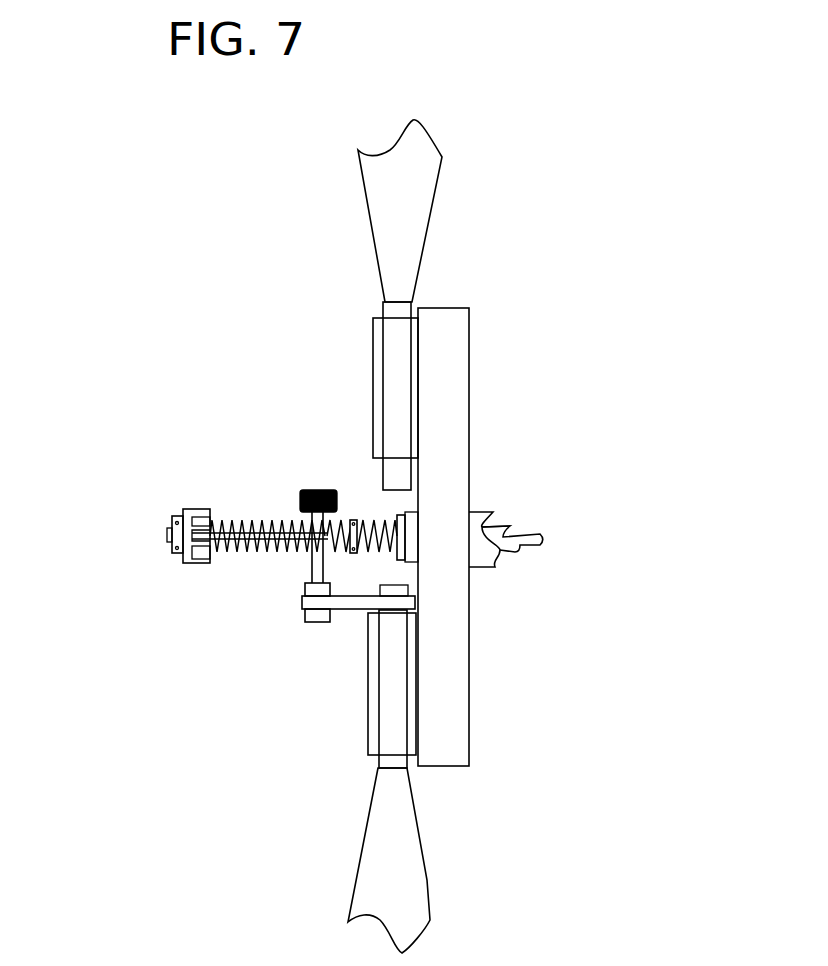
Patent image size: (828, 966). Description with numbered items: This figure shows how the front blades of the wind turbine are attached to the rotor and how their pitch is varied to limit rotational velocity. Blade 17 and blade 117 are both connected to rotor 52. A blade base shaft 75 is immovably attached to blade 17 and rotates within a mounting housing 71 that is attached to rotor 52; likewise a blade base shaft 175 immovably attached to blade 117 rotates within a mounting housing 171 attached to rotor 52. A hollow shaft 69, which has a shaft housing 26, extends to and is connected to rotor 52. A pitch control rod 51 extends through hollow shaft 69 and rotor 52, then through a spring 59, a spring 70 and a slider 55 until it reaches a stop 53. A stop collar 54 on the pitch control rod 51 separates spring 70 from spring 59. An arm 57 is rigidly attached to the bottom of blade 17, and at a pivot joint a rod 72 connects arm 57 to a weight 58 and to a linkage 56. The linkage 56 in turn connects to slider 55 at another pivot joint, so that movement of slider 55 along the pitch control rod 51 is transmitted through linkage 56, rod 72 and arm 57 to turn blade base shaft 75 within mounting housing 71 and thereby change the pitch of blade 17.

The blade 117 is at (417, 223).
The blade 17 is at (427, 877).
The mounting housing 171 is at (373, 333).
The blade base shaft 175 is at (390, 366).
The mounting housing 71 is at (370, 722).
The blade base shaft 75 is at (387, 758).
The rotor 52 is at (467, 717).
The slider 55 is at (203, 508).
The stop 53 is at (172, 522).
The pitch control rod 51 is at (168, 542).
The spring 70 is at (232, 556).
The linkage 56 is at (243, 520).
The spring 59 is at (378, 517).
The stop collar 54 is at (357, 555).
The weight 58 is at (303, 490).
The rod 72 is at (308, 563).
The arm 57 is at (303, 603).
The shaft housing 26 is at (483, 510).
The hollow shaft 69 is at (507, 523).